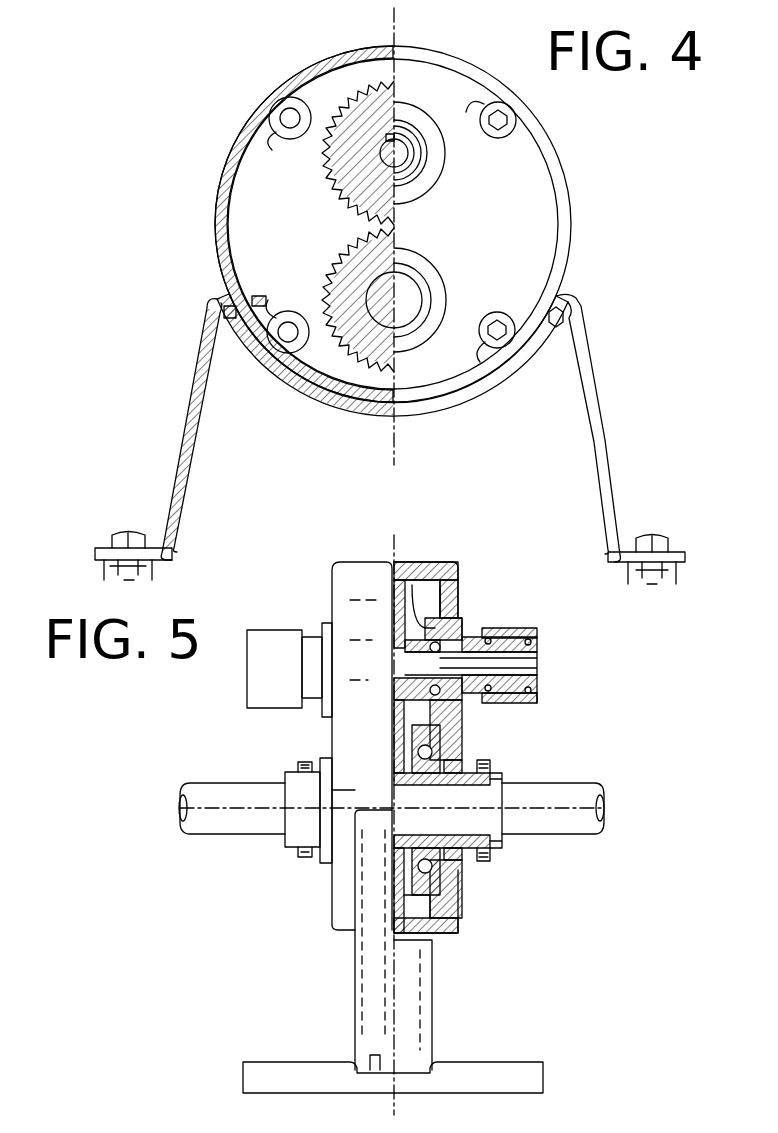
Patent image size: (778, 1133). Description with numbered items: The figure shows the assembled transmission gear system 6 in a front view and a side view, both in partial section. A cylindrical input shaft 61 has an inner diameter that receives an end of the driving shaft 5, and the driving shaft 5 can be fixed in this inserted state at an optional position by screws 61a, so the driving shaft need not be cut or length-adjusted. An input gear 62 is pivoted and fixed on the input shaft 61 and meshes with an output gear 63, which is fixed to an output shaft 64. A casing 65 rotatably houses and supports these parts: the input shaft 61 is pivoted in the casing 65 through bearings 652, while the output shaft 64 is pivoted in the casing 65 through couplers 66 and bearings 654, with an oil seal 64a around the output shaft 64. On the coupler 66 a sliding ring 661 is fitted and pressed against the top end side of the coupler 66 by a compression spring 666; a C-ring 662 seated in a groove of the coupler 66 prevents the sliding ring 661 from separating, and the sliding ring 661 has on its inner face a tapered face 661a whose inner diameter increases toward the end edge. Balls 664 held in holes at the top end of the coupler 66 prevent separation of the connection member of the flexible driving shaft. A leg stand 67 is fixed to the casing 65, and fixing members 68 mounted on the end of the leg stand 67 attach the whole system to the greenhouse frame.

In FIG. 5, the driving shaft 5 is at (215, 838).
In FIG. 4, the transmission gear system 6 is at (565, 158).
In FIG. 5, the transmission gear system 6 is at (327, 583).
In FIG. 4, the input shaft 61 is at (430, 282).
In FIG. 5, the input shaft 61 is at (290, 830).
In FIG. 5, the screws 61a is at (302, 758).
In FIG. 4, the input gear 62 is at (332, 250).
In FIG. 5, the input gear 62 is at (392, 905).
In FIG. 4, the output gear 63 is at (332, 213).
In FIG. 5, the output gear 63 is at (405, 595).
In FIG. 4, the output shaft 64 is at (400, 140).
In FIG. 5, the output shaft 64 is at (538, 656).
In FIG. 5, the oil seal 64a is at (466, 712).
In FIG. 4, the casing 65 is at (458, 56).
In FIG. 5, the casing 65 is at (432, 566).
In FIG. 5, the bearings 652 is at (458, 890).
In FIG. 5, the bearings 654 is at (425, 600).
In FIG. 4, the coupler 66 is at (440, 175).
In FIG. 5, the coupler 66 is at (314, 637).
In FIG. 5, the sliding ring 661 is at (256, 632).
In FIG. 5, the tapered face 661a is at (540, 698).
In FIG. 5, the C-ring 662 is at (538, 634).
In FIG. 5, the balls 664 is at (522, 708).
In FIG. 5, the compression spring 666 is at (490, 636).
In FIG. 4, the leg stand 67 is at (600, 448).
In FIG. 5, the leg stand 67 is at (357, 988).
In FIG. 4, the fixing members 68 is at (150, 572).
In FIG. 5, the fixing members 68 is at (295, 1062).